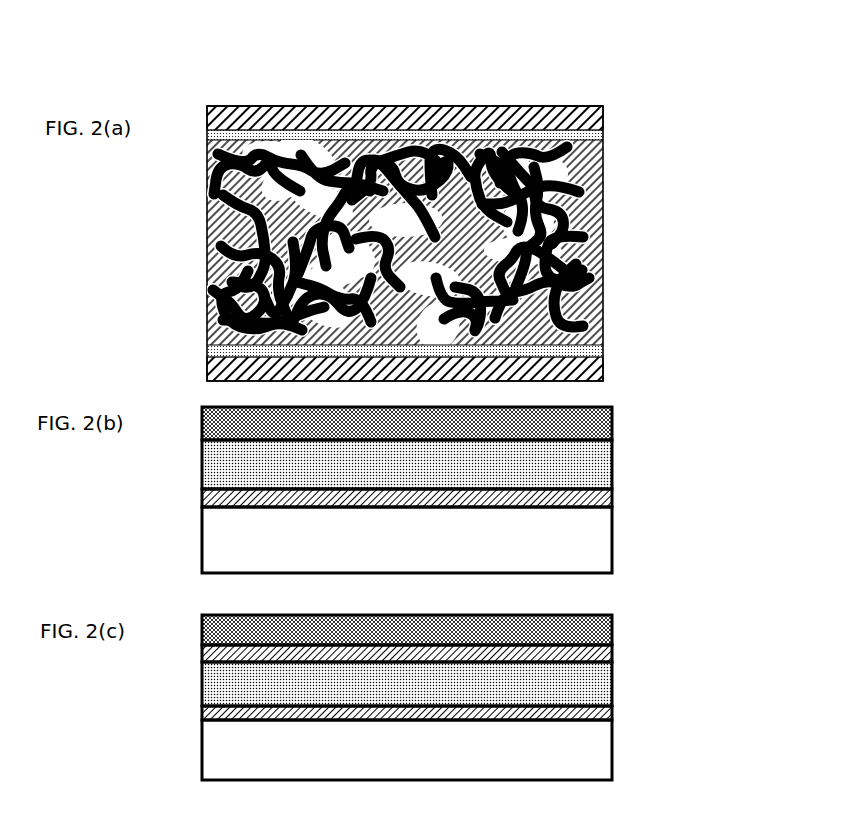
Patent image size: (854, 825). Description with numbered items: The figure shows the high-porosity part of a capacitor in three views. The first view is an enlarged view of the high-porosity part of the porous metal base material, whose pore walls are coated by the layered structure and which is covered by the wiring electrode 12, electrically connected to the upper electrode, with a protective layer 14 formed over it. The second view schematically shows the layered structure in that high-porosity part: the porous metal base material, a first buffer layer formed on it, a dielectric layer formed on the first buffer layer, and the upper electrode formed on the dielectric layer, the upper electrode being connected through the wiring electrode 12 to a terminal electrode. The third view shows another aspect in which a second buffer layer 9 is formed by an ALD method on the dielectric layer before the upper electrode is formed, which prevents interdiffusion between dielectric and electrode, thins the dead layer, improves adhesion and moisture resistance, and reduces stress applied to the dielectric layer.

The second buffer layer 9 is at (612, 650).
The wiring electrode 12 is at (349, 142).
The protective layer 14 is at (231, 106).